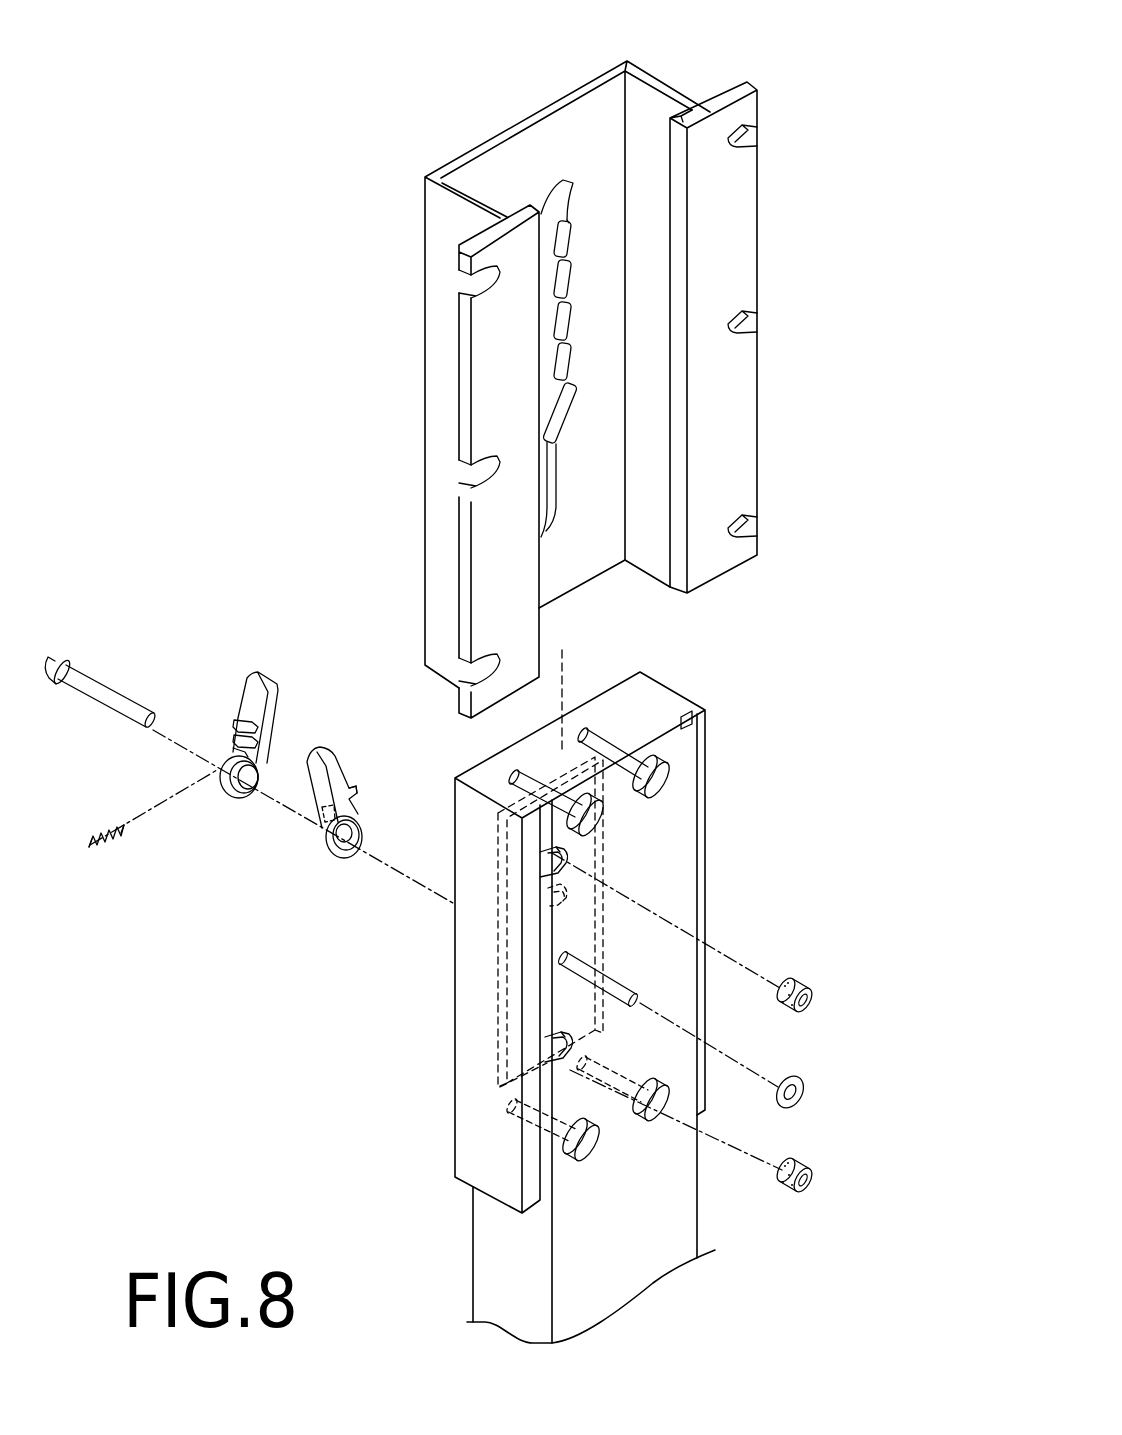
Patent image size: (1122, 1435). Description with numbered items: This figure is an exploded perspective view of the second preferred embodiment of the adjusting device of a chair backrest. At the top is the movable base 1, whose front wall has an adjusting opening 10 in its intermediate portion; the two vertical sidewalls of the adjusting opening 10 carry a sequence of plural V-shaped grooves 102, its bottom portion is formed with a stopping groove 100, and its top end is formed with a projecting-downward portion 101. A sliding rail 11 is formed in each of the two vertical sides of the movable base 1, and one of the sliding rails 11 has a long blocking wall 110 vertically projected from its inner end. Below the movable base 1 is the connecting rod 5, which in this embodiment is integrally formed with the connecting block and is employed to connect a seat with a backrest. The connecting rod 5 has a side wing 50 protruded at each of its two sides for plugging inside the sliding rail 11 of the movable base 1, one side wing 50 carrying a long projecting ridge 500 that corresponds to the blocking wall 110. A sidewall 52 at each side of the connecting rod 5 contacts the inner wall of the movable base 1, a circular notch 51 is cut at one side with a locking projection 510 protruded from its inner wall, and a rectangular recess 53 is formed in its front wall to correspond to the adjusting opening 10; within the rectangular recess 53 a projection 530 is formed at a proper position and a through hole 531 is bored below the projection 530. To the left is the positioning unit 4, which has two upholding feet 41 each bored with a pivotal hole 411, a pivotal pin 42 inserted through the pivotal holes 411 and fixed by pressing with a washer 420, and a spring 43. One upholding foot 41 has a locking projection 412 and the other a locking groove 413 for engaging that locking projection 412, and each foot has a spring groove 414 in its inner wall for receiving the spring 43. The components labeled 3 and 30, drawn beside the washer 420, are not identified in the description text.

The movable base 1 is at (467, 150).
The sliding rail 11 is at (443, 170).
The long blocking wall 110 is at (672, 112).
The adjusting opening 10 is at (553, 358).
The projecting-downward portion 101 is at (552, 217).
The V-shaped grooves 102 is at (573, 260).
The stopping groove 100 is at (557, 513).
The side wing 50 is at (673, 690).
The long projecting ridge 500 is at (700, 730).
The sidewall 52 is at (675, 775).
The circular notch 51 is at (553, 866).
The locking projection 510 is at (557, 850).
The rectangular recess 53 is at (500, 968).
The projection 530 is at (540, 905).
The through hole 531 is at (640, 1003).
The connecting rod 5 is at (673, 1232).
The nut 3 is at (803, 1012).
The knurled surface of nut 30 is at (800, 985).
The washer 420 is at (805, 1082).
The positioning unit 4 is at (187, 632).
The upholding feet 41 is at (260, 672).
The pivotal hole 411 is at (355, 828).
The locking projection 412 is at (362, 788).
The locking groove 413 is at (267, 758).
The spring groove 414 is at (237, 752).
The pivotal pin 42 is at (98, 682).
The spring 43 is at (97, 823).